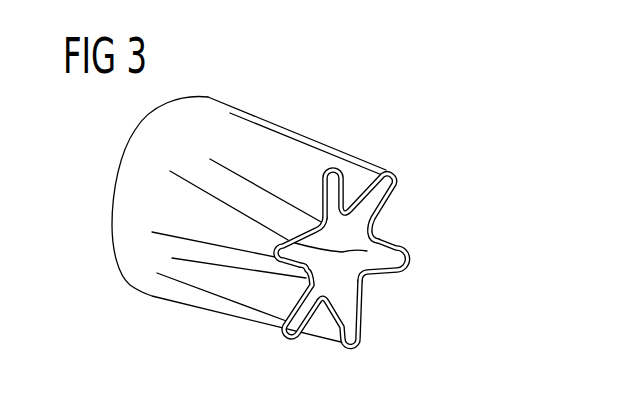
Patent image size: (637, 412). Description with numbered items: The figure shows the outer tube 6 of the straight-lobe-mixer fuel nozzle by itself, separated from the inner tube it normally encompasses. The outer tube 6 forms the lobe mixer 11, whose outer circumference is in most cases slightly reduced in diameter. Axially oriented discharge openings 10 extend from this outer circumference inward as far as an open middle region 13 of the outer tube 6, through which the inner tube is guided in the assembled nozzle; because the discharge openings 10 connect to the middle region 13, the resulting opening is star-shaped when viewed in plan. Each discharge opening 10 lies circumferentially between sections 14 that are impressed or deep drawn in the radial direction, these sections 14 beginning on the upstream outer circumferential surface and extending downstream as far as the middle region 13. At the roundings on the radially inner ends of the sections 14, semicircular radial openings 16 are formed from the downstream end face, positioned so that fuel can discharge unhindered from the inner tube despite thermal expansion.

The outer tube 6 is at (207, 110).
The axially oriented discharge openings 10 is at (302, 313).
The lobe mixer 11 is at (417, 272).
The middle region 13 is at (372, 240).
The sections 14 is at (357, 203).
The radial openings or recesses 16 is at (358, 284).